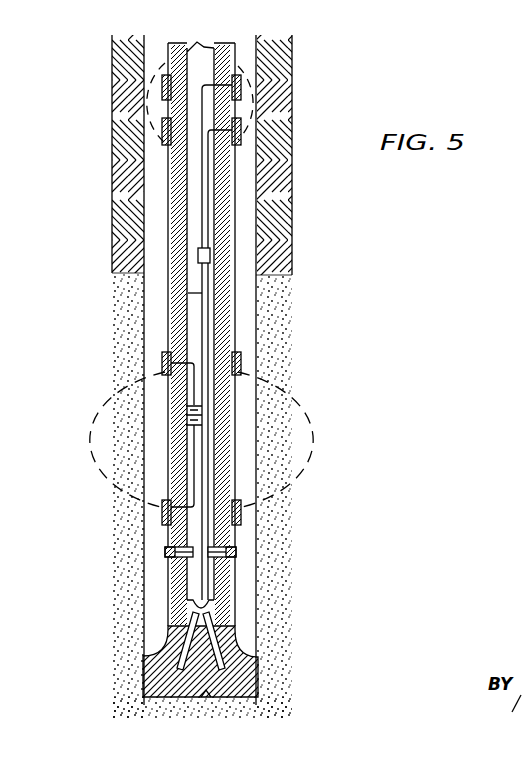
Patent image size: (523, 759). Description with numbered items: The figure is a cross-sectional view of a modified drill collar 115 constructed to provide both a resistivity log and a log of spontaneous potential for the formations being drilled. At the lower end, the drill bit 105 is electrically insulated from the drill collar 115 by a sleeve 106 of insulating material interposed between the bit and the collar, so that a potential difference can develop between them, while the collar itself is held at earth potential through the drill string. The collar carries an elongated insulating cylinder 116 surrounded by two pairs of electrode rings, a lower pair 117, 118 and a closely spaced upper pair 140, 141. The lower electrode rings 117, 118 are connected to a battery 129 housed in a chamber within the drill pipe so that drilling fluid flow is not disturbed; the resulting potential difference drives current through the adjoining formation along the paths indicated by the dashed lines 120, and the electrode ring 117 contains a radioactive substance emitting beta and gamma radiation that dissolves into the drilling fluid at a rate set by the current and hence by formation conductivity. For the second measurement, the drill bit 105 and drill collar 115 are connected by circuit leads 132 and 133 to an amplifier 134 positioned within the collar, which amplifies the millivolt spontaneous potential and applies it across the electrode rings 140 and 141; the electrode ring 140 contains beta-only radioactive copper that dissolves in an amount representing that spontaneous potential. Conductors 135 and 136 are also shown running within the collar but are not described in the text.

The drill bit 105 is at (258, 663).
The sleeve of insulating material 106 is at (168, 562).
The drill collar 115 is at (236, 462).
The insulating cylinder 116 is at (230, 208).
The electrode ring 117 is at (241, 356).
The electrode ring 118 is at (241, 513).
The dashed lines 120 is at (305, 408).
The battery 129 is at (188, 418).
The circuit lead 132 is at (203, 327).
The circuit lead 133 is at (190, 294).
The amplifier 134 is at (198, 257).
The conductor 135 is at (208, 240).
The conductor 136 is at (202, 222).
The electrode ring 140 is at (238, 85).
The electrode ring 141 is at (242, 133).